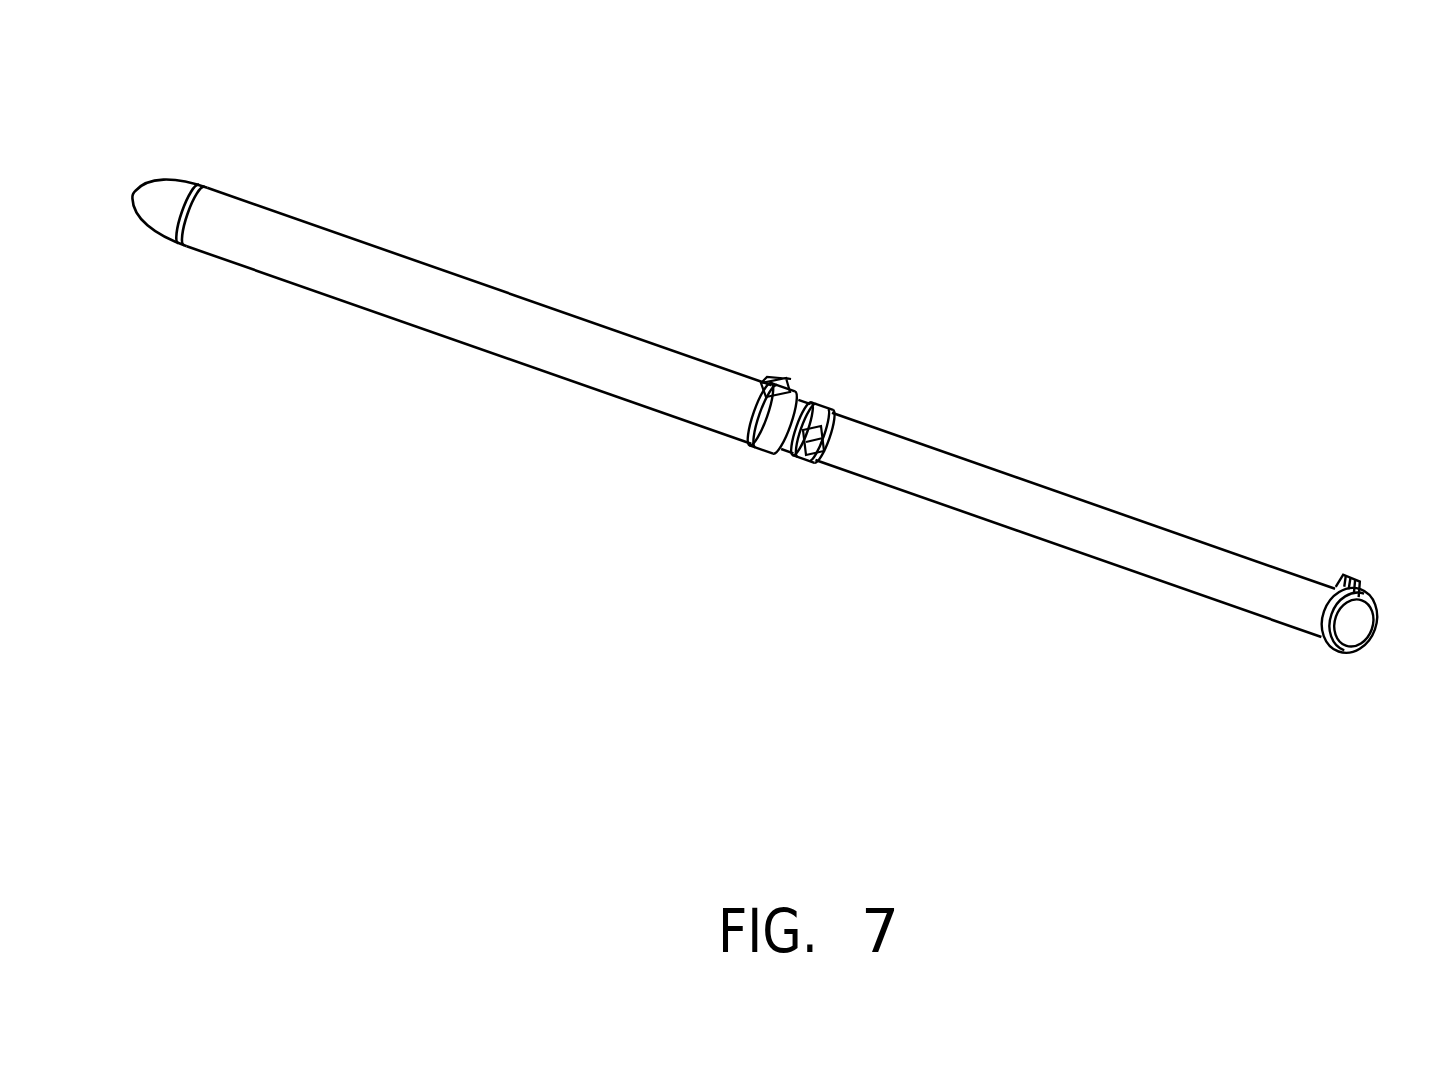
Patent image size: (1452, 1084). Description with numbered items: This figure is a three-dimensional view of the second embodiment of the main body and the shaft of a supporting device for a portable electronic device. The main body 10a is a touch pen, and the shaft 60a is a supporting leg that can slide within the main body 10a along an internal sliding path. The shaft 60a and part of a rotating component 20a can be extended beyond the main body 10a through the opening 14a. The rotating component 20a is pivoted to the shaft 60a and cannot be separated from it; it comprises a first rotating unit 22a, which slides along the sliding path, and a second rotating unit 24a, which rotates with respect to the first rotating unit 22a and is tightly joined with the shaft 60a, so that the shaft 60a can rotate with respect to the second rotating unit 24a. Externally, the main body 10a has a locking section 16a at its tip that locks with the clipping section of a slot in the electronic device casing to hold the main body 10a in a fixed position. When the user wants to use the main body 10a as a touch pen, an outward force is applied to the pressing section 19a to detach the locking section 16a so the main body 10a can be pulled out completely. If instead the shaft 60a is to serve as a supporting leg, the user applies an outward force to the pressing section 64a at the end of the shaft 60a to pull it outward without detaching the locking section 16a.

The main body 10a is at (333, 257).
The locking section 16a is at (182, 188).
The pressing section 19a is at (774, 374).
The opening 14a is at (805, 385).
The rotating component 20a is at (830, 397).
The first rotating unit 22a is at (770, 453).
The second rotating unit 24a is at (795, 443).
The shaft 60a is at (1068, 515).
The pressing section 64a is at (1347, 573).